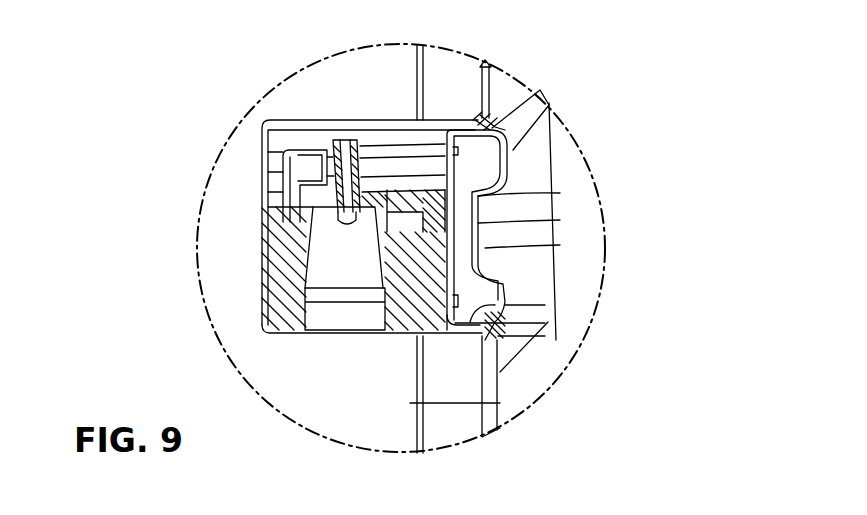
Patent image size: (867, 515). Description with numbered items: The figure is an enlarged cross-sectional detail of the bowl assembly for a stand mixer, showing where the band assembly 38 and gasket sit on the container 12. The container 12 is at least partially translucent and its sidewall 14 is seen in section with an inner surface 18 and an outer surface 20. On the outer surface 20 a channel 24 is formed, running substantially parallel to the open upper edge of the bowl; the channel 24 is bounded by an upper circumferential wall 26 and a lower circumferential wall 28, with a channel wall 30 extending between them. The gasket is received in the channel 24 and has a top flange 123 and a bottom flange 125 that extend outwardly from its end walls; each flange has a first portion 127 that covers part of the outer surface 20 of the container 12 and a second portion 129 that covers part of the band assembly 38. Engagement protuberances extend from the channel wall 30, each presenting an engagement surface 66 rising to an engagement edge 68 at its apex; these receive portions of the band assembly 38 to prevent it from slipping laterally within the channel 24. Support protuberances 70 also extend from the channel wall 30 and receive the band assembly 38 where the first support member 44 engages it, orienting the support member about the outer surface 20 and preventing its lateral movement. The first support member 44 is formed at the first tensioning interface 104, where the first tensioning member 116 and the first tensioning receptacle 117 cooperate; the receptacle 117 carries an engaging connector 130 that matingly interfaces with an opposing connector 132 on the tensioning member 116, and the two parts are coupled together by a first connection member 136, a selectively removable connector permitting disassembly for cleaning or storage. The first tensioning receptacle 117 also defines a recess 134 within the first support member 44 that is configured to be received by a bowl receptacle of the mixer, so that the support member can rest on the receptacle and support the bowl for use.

The container 12 is at (548, 406).
The sidewall 14 is at (537, 370).
The inner surface 18 is at (560, 172).
The outer surface 20 is at (410, 403).
The channel 24 is at (502, 288).
The upper circumferential wall 26 is at (495, 118).
The lower circumferential wall 28 is at (545, 323).
The channel wall 30 is at (518, 165).
The band assembly 38 is at (362, 95).
The first support member 44 is at (220, 272).
The engagement surface 66 is at (560, 193).
The engagement edge 68 is at (560, 220).
The support protuberance 70 is at (560, 245).
The first tensioning interface 104 is at (238, 180).
The first tensioning member 116 is at (310, 120).
The first tensioning receptacle 117 is at (272, 322).
The top flange 123 is at (483, 117).
The bottom flange 125 is at (545, 336).
The first portion 127 is at (497, 340).
The second portion 129 is at (545, 305).
The engaging connector 130 is at (322, 192).
The opposing connector 132 is at (262, 222).
The recess 134 is at (327, 318).
The first connection member 136 is at (345, 226).